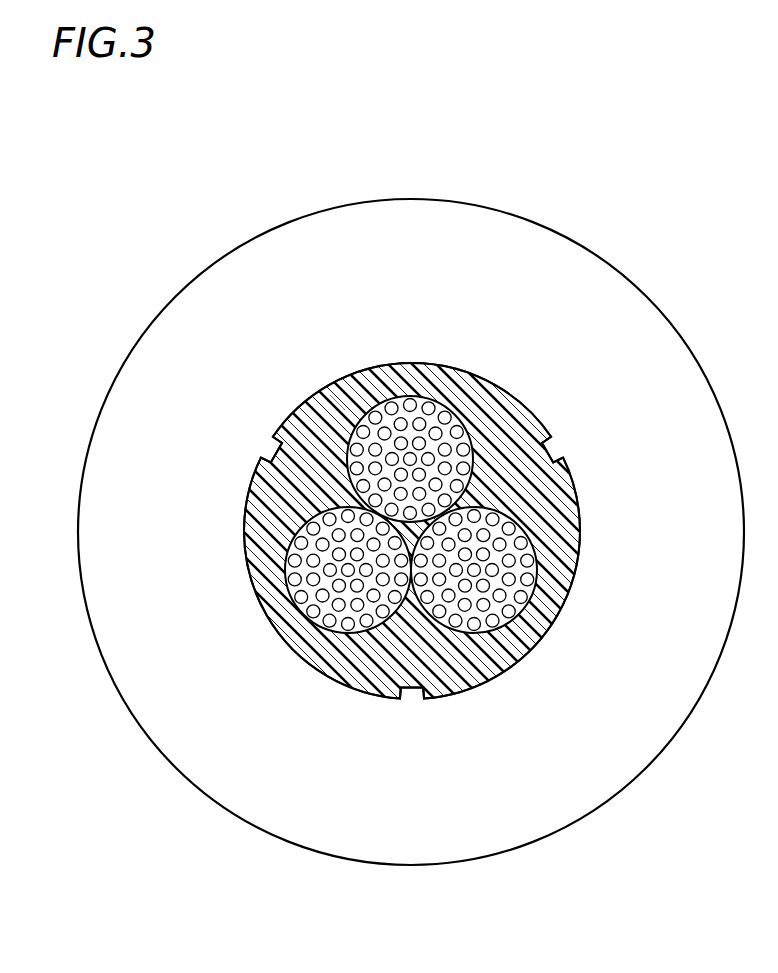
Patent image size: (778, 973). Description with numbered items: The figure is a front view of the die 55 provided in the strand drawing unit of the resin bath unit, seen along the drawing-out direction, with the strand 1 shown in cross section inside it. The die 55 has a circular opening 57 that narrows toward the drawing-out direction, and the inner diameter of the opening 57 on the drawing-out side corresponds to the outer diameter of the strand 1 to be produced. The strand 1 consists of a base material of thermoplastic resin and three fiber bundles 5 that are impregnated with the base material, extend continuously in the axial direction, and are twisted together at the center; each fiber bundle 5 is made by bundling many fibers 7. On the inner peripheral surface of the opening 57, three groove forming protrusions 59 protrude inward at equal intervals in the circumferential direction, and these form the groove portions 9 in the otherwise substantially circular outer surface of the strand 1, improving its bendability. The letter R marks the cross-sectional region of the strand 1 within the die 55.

The strand 1 is at (361, 350).
The fiber bundles 5 is at (405, 393).
The fibers 7 is at (530, 557).
The groove portions 9 is at (568, 482).
The die 55 is at (505, 242).
The opening 57 is at (508, 662).
The groove forming protrusions 59 is at (557, 463).
The region R is at (337, 403).